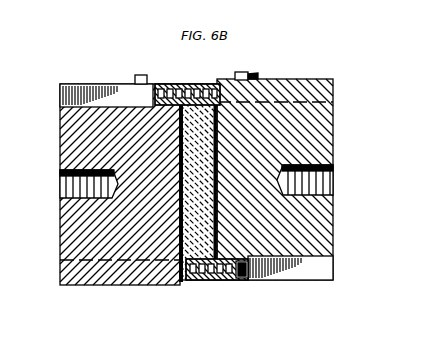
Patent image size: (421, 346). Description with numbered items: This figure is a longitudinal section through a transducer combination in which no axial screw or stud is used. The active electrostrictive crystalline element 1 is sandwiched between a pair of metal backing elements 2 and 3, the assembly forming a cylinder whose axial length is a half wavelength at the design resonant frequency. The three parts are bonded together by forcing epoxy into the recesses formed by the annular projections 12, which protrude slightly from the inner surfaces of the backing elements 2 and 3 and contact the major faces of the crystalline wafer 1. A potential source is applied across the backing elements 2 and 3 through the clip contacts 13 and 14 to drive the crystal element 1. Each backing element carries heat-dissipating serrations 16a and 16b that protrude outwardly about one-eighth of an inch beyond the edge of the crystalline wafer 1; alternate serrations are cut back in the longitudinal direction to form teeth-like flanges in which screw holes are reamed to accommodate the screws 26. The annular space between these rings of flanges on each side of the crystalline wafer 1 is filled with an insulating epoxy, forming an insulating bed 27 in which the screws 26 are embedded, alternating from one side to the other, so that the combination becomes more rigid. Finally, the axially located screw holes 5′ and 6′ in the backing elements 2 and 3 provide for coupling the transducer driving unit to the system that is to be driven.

The electrostrictive crystalline element 1 is at (196, 83).
The metal backing element 2 is at (117, 255).
The metal backing element 3 is at (291, 242).
The axially located screw hole 5′ is at (70, 192).
The axially located screw hole 6′ is at (330, 184).
The annular projection 12 is at (170, 260).
The clip contact 13 is at (131, 83).
The clip contact 14 is at (255, 78).
The surface serrations 16a is at (62, 97).
The surface serrations 16b is at (327, 267).
The screw 26 is at (163, 83).
The insulating bed 27 is at (199, 274).